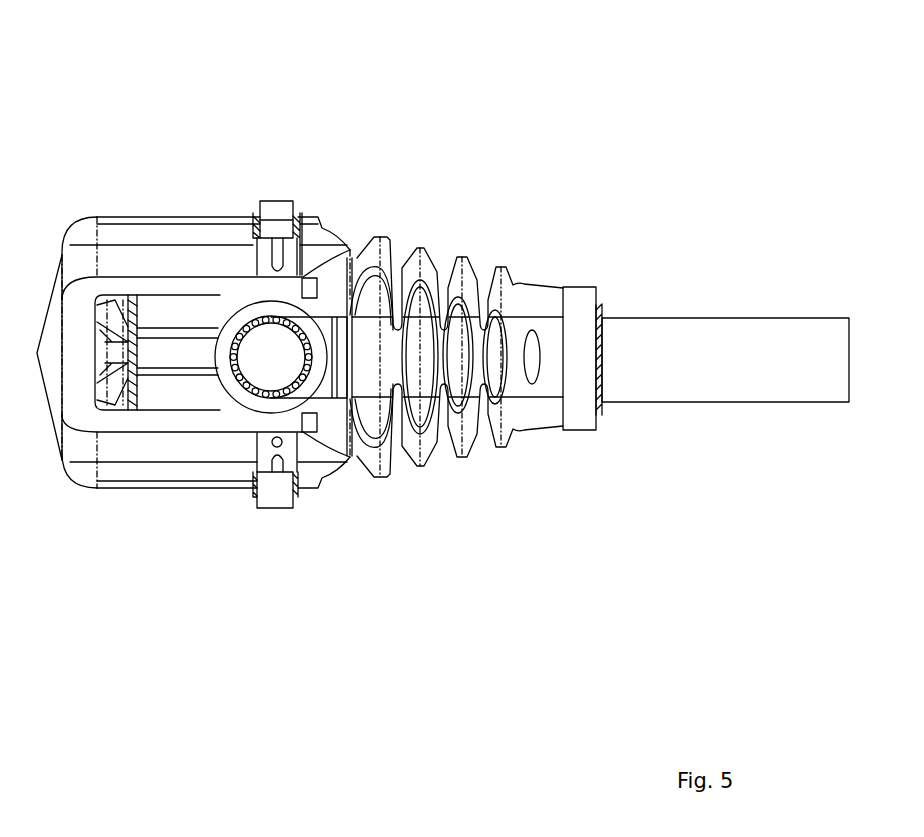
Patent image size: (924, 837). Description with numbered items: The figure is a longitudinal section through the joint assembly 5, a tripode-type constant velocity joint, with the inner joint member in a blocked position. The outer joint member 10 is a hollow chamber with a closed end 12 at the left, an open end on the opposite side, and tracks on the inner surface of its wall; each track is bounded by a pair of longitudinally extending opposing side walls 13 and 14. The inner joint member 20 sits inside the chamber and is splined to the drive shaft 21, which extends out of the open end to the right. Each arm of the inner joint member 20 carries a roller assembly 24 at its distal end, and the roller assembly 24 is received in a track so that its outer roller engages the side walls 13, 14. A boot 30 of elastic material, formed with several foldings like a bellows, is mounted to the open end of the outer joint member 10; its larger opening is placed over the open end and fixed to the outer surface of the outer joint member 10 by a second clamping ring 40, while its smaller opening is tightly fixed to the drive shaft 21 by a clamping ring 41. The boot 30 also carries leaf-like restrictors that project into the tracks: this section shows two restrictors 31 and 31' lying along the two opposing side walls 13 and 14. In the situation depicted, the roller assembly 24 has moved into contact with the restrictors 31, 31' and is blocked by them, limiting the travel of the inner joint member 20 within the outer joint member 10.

The joint assembly 5 is at (250, 98).
The outer joint member 10 is at (202, 218).
The closed end 12 is at (70, 270).
The side wall 13 is at (203, 296).
The side wall 14 is at (206, 413).
The inner joint member 20 is at (207, 328).
The drive shaft 21 is at (747, 333).
The roller assembly 24 is at (215, 367).
The boot 30 is at (535, 280).
The restrictor 31 is at (370, 254).
The restrictor 31' is at (370, 454).
The second clamping ring 40 is at (282, 208).
The clamping ring 41 is at (578, 423).